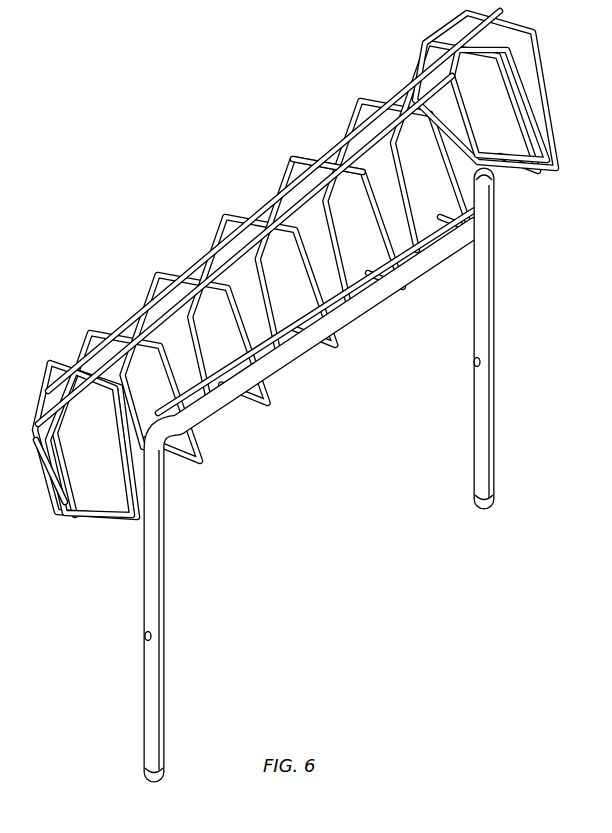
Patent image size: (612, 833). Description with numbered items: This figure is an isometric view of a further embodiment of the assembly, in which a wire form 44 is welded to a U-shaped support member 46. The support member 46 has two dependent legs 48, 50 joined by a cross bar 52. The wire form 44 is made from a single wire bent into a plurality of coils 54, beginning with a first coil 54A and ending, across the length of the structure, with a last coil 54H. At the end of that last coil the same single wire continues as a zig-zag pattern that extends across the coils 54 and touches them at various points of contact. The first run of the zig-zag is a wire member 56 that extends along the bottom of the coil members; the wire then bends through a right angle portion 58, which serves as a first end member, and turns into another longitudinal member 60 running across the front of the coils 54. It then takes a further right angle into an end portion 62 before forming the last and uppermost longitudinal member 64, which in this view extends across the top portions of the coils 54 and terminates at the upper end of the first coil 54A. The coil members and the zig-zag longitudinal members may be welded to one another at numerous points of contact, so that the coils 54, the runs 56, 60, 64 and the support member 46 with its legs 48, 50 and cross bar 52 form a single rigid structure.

The wire form 44 is at (290, 154).
The U-shaped support member 46 is at (170, 543).
The dependent leg 48 is at (166, 600).
The dependent leg 50 is at (474, 468).
The cross bar 52 is at (328, 282).
The coils 54 is at (366, 98).
The first coil 54A is at (60, 522).
The last coil 54H is at (545, 75).
The wire member 56 is at (362, 300).
The right angle portion 58 is at (50, 472).
The longitudinal member 60 is at (243, 259).
The end portion 62 is at (470, 63).
The uppermost longitudinal member 64 is at (343, 156).